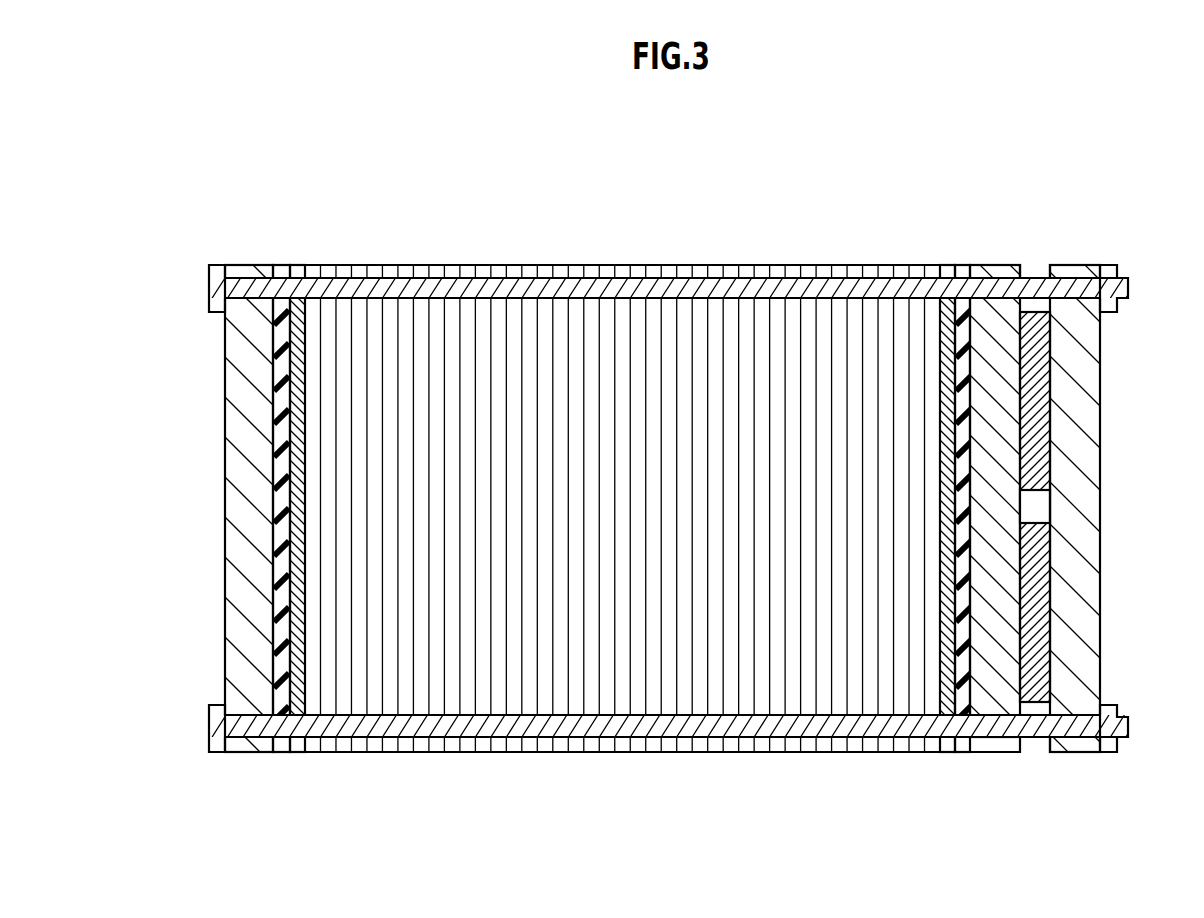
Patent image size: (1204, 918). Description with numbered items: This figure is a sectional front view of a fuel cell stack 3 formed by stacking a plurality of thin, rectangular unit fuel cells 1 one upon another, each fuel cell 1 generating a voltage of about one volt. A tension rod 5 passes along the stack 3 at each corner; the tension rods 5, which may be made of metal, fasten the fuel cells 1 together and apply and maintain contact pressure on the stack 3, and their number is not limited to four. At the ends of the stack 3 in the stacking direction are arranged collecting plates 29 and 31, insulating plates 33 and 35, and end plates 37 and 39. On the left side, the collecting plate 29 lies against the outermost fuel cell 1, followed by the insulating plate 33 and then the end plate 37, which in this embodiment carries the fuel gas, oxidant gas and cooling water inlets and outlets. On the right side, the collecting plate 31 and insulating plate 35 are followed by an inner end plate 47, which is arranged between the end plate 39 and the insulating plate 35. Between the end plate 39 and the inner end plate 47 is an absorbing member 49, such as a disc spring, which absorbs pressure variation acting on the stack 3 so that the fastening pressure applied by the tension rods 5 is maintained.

The unit fuel cell 1 is at (558, 693).
The fuel cell stack 3 is at (622, 514).
The tension rod 5 is at (559, 295).
The collecting plate 29 is at (297, 700).
The collecting plate 31 is at (948, 700).
The insulating plate 33 is at (281, 700).
The insulating plate 35 is at (962, 695).
The end plate 37 is at (248, 394).
The end plate 39 is at (1095, 387).
The inner end plate 47 is at (997, 272).
The absorbing member 49 is at (1043, 567).